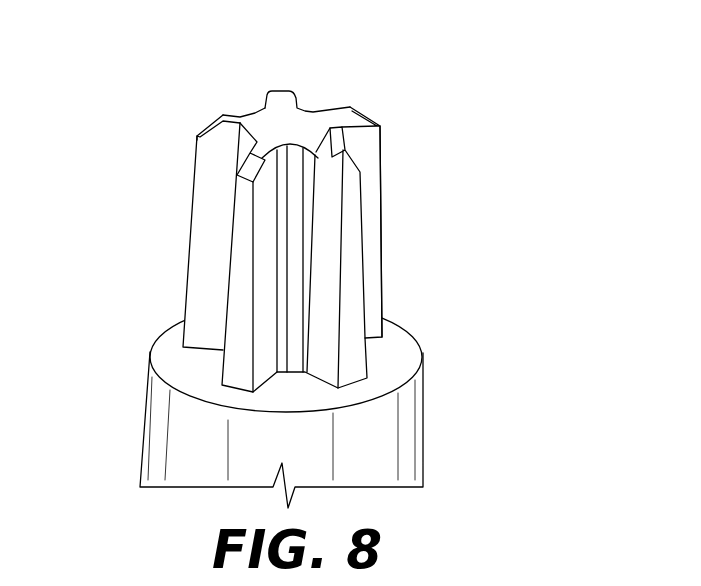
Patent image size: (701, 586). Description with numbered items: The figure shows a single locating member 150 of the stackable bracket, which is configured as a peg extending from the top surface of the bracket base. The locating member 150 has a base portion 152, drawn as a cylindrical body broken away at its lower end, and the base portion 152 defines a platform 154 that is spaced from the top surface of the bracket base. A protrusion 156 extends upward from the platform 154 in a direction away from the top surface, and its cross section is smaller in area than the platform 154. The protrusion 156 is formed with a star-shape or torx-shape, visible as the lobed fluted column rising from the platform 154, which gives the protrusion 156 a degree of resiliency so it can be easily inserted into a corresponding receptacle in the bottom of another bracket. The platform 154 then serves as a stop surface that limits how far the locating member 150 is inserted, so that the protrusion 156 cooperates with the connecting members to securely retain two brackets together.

The locating member 150 is at (320, 272).
The base portion 152 is at (423, 411).
The platform 154 is at (296, 380).
The protrusion 156 is at (320, 289).